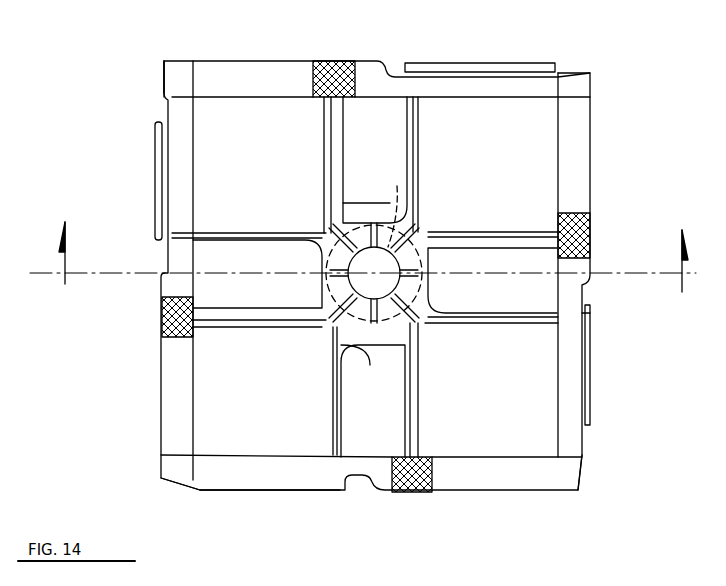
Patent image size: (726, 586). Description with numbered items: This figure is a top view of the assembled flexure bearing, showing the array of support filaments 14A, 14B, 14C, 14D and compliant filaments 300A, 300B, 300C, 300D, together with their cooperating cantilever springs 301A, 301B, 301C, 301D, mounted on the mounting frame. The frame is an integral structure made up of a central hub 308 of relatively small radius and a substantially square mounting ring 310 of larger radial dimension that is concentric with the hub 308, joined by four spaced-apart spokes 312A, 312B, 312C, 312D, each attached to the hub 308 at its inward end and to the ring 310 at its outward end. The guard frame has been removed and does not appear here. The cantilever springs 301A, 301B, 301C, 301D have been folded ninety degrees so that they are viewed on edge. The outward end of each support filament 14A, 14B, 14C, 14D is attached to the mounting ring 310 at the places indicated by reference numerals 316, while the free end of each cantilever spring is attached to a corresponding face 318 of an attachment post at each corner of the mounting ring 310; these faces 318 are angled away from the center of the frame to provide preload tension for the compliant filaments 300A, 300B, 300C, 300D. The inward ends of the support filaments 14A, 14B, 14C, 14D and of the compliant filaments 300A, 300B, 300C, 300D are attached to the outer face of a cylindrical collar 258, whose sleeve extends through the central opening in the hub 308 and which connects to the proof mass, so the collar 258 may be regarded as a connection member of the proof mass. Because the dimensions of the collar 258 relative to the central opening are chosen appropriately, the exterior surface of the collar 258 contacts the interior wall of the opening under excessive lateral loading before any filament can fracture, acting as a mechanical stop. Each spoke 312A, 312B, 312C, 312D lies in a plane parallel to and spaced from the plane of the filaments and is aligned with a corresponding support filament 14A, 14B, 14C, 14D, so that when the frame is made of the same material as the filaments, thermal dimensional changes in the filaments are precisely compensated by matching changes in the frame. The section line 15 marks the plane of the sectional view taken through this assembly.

The mounting ring 310 is at (233, 75).
The attachment places of support filaments 316 is at (336, 68).
The face of attachment post 318 is at (163, 66).
The cantilever spring 301A is at (588, 358).
The cantilever spring 301B is at (262, 490).
The cantilever spring 301C is at (157, 150).
The cantilever spring 301D is at (450, 64).
The compliant filament 300A is at (530, 318).
The compliant filament 300B is at (333, 414).
The compliant filament 300C is at (246, 232).
The compliant filament 300D is at (418, 153).
The spoke 312A is at (440, 231).
The spoke 312B is at (424, 378).
The spoke 312C is at (277, 328).
The spoke 312D is at (322, 176).
The support filament 14A is at (517, 240).
The support filament 14B is at (404, 395).
The support filament 14C is at (249, 318).
The support filament 14D is at (328, 133).
The cylindrical collar 258 is at (384, 208).
The central hub 308 is at (369, 347).
The section line 15- 15 is at (74, 309).